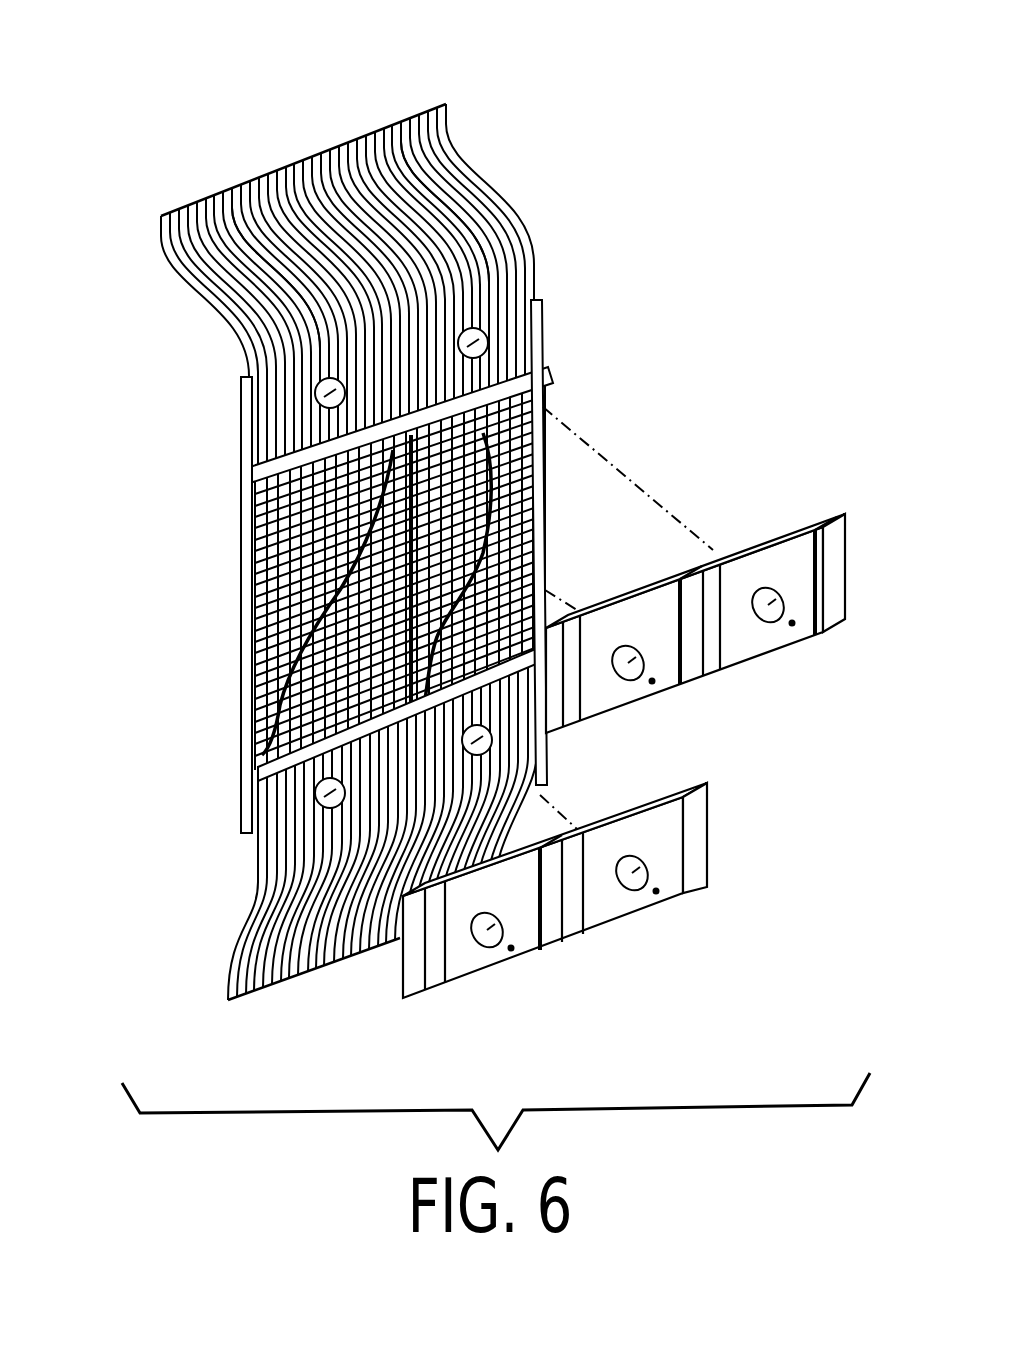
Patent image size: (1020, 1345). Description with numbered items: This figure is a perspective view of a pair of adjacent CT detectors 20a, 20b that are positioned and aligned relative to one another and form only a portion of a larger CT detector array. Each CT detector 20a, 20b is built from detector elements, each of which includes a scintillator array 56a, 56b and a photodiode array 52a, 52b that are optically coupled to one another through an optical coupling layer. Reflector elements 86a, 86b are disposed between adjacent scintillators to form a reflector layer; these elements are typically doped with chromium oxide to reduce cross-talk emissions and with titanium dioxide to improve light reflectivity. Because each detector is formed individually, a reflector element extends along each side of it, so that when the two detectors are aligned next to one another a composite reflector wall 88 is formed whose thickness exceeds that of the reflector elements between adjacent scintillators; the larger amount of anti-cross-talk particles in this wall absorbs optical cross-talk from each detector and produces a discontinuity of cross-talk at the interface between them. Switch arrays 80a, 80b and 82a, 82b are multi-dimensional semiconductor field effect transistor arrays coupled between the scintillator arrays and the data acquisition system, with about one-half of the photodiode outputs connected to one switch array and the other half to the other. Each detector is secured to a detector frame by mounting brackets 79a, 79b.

The CT detector 20a is at (545, 185).
The CT detector 20b is at (192, 325).
The switch array 80a is at (398, 150).
The switch array 80b is at (233, 213).
The reflector element 86a is at (532, 333).
The reflector element 86b is at (246, 480).
The scintillator array 56a is at (540, 433).
The scintillator array 56b is at (262, 778).
The photodiode array 52a is at (500, 523).
The photodiode array 52b is at (278, 540).
The composite reflector wall 88 is at (380, 468).
The mounting bracket 79a is at (787, 548).
The mounting bracket 79b is at (648, 652).
The switch array 82a is at (566, 763).
The switch array 82b is at (277, 982).